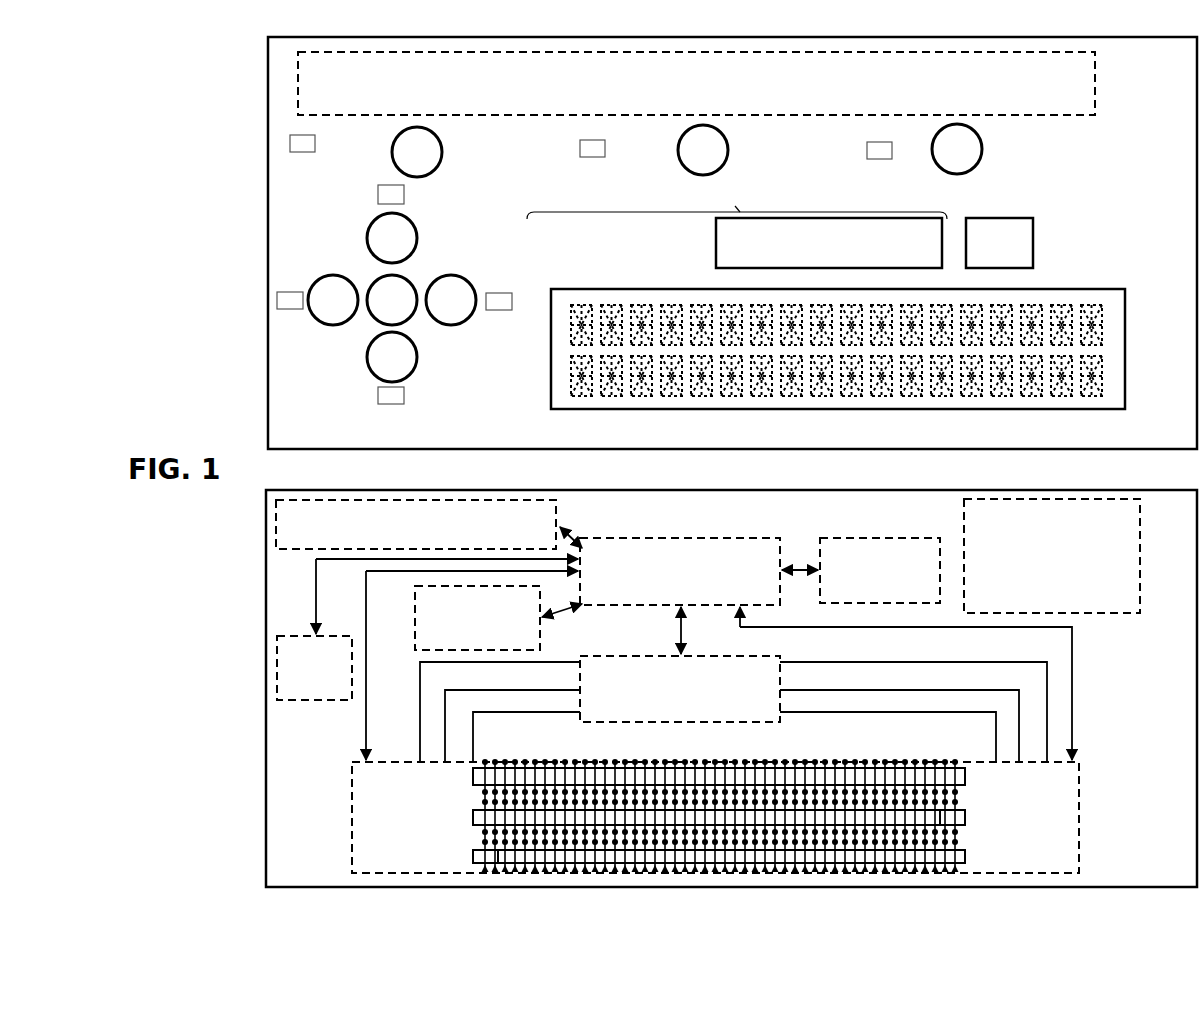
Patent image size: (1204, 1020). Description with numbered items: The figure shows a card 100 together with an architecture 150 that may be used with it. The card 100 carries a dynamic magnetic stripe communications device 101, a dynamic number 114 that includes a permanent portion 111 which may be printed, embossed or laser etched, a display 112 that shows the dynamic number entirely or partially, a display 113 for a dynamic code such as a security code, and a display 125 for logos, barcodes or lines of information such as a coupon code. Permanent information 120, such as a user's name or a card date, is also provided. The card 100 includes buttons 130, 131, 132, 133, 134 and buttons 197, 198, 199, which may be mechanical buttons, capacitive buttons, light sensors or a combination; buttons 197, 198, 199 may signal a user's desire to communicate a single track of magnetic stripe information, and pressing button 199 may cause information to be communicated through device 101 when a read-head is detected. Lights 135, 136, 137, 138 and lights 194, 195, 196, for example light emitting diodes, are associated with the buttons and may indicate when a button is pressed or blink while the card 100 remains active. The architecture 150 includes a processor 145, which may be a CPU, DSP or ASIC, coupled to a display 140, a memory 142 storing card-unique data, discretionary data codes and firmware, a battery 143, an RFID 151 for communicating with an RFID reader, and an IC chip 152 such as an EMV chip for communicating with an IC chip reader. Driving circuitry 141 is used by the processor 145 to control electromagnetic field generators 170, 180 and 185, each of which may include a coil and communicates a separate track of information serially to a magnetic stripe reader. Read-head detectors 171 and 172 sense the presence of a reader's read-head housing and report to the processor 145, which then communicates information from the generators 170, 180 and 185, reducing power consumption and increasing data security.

The card 100 is at (268, 240).
The dynamic magnetic stripe communications device 101 is at (362, 114).
The permanent portion 111 is at (650, 246).
The display 112 is at (775, 262).
The display 113 is at (1010, 262).
The dynamic number 114 is at (737, 203).
The permanent information 120 is at (346, 424).
The display 125 is at (1077, 412).
The button 130 is at (388, 276).
The button 131 is at (333, 275).
The button 132 is at (475, 297).
The button 133 is at (415, 243).
The button 134 is at (367, 359).
The light 135 is at (277, 300).
The light 136 is at (379, 203).
The light 137 is at (513, 302).
The light 138 is at (404, 401).
The display 140 is at (840, 539).
The driving circuitry 141 is at (630, 657).
The memory 142 is at (316, 500).
The battery 143 is at (963, 532).
The processor 145 is at (742, 540).
The architecture 150 is at (735, 490).
The radio frequency identification (RFID) 151 is at (414, 622).
The integrated circuit (IC) chip 152 is at (300, 636).
The electromagnetic field generator 170 is at (608, 764).
The read-head detector 171 is at (362, 762).
The read-head detector 172 is at (978, 763).
The electromagnetic field generator 180 is at (966, 818).
The electromagnetic field generator 185 is at (474, 846).
The light 194 is at (887, 161).
The light 195 is at (600, 160).
The light 196 is at (292, 144).
The button 197 is at (940, 165).
The button 198 is at (678, 152).
The button 199 is at (392, 152).